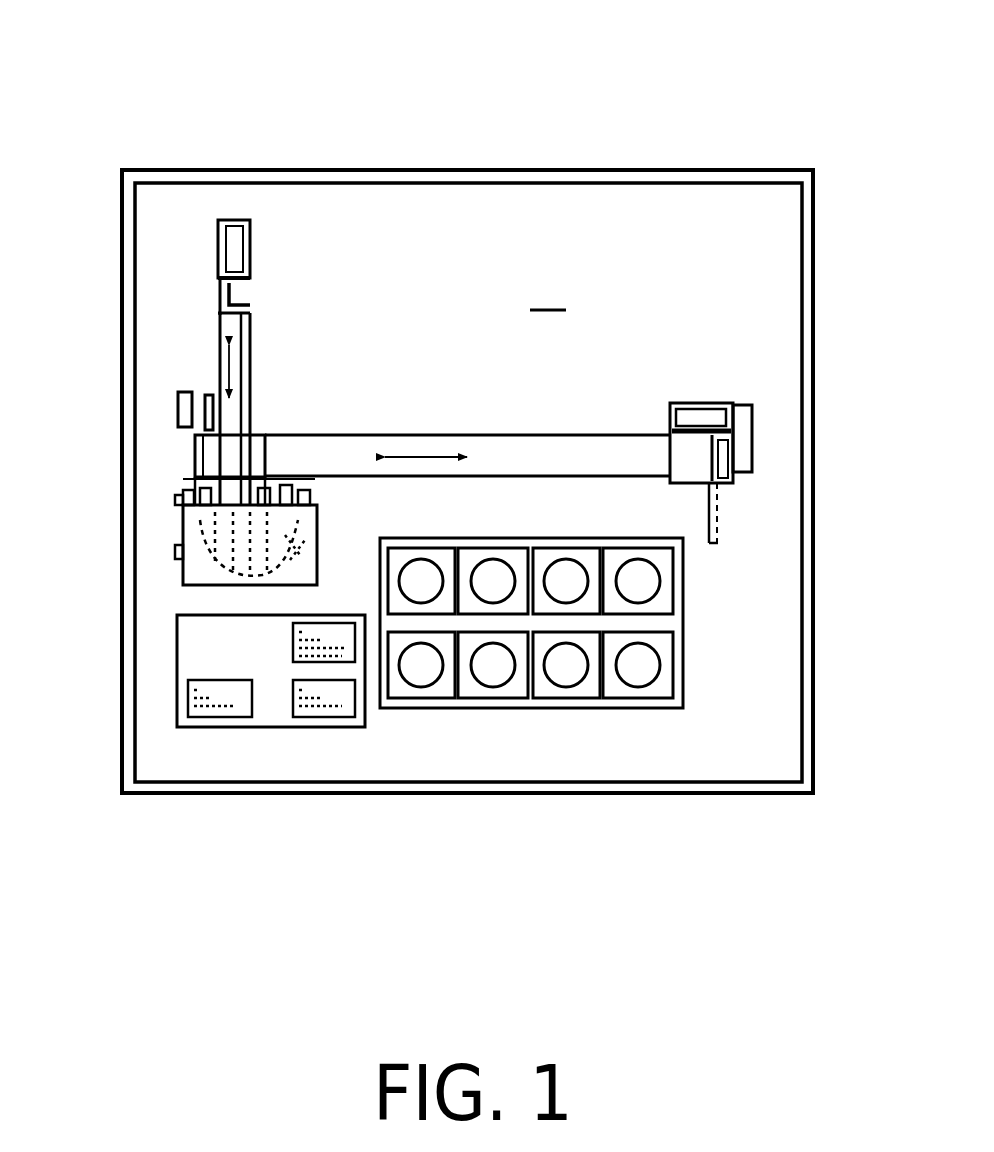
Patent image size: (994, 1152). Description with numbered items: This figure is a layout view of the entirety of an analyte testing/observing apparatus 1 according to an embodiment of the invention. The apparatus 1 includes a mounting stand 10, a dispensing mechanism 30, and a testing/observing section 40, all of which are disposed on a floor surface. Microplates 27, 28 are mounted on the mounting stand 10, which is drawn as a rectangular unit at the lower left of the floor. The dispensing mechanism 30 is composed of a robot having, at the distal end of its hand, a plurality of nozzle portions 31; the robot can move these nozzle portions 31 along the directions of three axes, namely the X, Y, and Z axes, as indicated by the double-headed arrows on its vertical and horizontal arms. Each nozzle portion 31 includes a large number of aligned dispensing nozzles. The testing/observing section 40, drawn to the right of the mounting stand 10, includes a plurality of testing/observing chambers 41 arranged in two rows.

The analyte testing/observing apparatus 1 is at (583, 125).
The mounting stand 10 is at (199, 690).
The microplate 27 is at (218, 727).
The microplate 28 is at (336, 622).
The dispensing mechanism 30 is at (300, 406).
The nozzle portion 31 is at (182, 500).
The testing/observing section 40 is at (631, 704).
The testing/observing chamber 41 is at (648, 700).